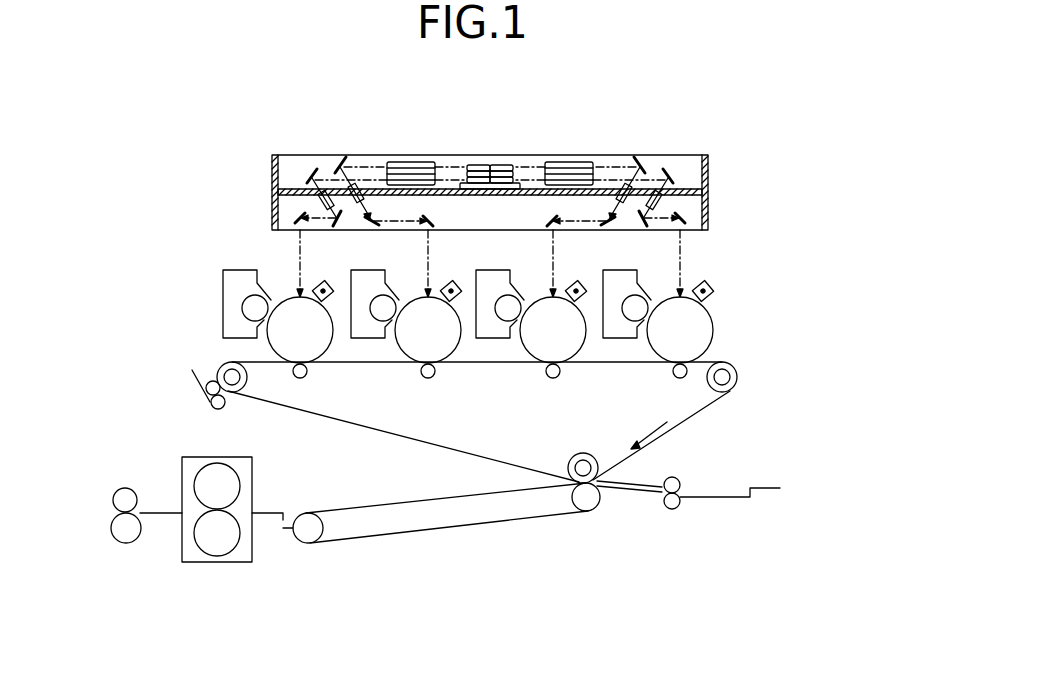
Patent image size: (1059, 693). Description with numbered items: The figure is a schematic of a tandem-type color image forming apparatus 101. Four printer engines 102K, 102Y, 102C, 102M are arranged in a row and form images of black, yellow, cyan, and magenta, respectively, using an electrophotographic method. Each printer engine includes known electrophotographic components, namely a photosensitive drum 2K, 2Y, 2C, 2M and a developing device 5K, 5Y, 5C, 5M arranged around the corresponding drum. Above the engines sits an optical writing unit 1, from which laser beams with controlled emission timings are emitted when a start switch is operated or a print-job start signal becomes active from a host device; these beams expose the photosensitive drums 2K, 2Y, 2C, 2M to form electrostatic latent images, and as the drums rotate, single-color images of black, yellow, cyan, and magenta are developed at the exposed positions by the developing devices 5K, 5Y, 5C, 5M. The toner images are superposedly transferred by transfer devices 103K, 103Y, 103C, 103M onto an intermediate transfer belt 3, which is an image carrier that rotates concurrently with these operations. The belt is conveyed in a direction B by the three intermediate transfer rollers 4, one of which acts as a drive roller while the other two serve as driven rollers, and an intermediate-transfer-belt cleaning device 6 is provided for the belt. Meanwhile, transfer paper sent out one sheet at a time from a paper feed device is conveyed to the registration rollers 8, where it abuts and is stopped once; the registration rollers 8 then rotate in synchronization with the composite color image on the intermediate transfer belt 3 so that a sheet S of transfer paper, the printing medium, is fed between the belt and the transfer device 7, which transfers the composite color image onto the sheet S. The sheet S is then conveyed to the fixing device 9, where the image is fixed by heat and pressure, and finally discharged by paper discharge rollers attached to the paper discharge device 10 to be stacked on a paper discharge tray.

The optical writing unit 1 is at (272, 182).
The color image forming apparatus 101 is at (702, 142).
The developing device 5K is at (232, 270).
The developing device 5Y is at (370, 270).
The developing device 5C is at (494, 270).
The developing device 5M is at (628, 270).
The printer engine 102K is at (280, 296).
The printer engine 102Y is at (408, 296).
The printer engine 102C is at (533, 296).
The printer engine 102M is at (660, 296).
The photosensitive drum 2K is at (321, 284).
The photosensitive drum 2Y is at (449, 284).
The photosensitive drum 2C is at (575, 284).
The photosensitive drum 2M is at (703, 284).
The transfer device 103K is at (305, 378).
The transfer device 103Y is at (430, 378).
The transfer device 103C is at (556, 378).
The transfer device 103M is at (684, 378).
The intermediate transfer belt 3 is at (320, 416).
The intermediate transfer rollers 4 is at (224, 368).
The intermediate-transfer-belt cleaning device 6 is at (200, 392).
The transfer device 7 is at (605, 497).
The registration rollers 8 is at (688, 505).
The fixing device 9 is at (197, 457).
The paper discharge device 10 is at (122, 488).
The sheet of transfer paper S is at (642, 484).
The conveying direction B is at (649, 433).